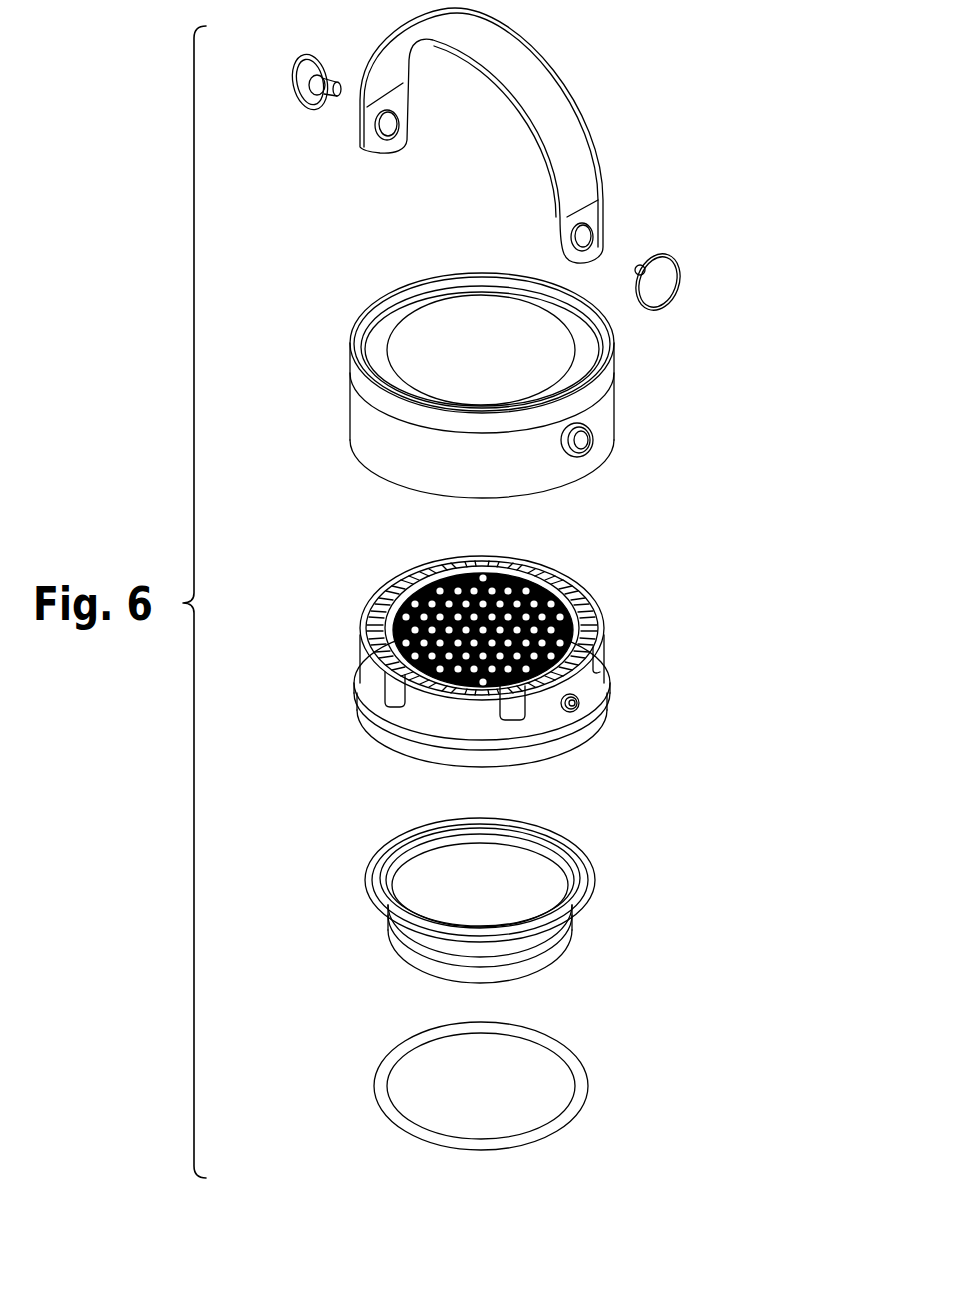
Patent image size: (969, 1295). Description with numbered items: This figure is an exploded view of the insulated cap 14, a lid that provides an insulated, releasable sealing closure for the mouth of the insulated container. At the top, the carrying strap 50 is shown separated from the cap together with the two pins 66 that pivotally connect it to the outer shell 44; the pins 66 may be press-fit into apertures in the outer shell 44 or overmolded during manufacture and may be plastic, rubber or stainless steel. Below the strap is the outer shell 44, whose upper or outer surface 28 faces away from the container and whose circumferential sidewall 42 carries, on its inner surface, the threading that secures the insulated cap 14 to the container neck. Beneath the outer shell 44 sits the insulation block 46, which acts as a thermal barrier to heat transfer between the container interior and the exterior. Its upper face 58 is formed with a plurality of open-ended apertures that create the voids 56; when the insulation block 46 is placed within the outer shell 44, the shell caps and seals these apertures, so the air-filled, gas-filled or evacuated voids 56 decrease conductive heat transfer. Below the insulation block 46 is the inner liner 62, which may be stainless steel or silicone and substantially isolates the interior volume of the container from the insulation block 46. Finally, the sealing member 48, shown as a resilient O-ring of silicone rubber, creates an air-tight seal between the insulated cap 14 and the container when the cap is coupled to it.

The insulated cap 14 is at (800, 452).
The upper or outer surface of the insulated cap 28 is at (430, 330).
The circumferential sidewall 42 is at (483, 368).
The outer shell 44 is at (614, 412).
The insulation block 46 is at (500, 648).
The sealing member 48 is at (590, 1088).
The carrying strap 50 is at (600, 152).
The voids or apertures 56 is at (400, 583).
The upper face of insulation block 58 is at (362, 623).
The inner liner 62 is at (596, 892).
The pins 66 is at (290, 83).